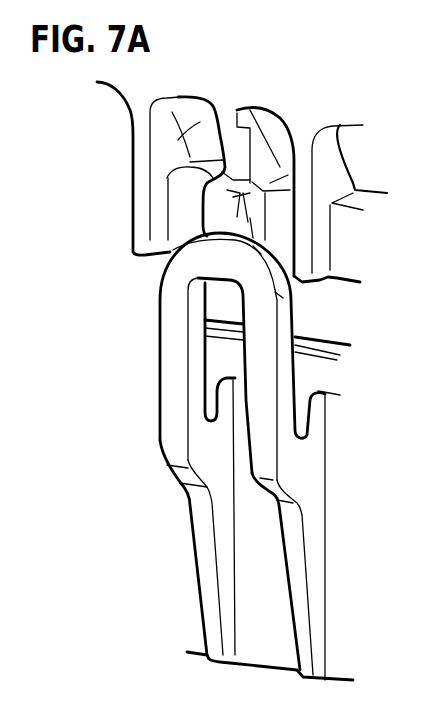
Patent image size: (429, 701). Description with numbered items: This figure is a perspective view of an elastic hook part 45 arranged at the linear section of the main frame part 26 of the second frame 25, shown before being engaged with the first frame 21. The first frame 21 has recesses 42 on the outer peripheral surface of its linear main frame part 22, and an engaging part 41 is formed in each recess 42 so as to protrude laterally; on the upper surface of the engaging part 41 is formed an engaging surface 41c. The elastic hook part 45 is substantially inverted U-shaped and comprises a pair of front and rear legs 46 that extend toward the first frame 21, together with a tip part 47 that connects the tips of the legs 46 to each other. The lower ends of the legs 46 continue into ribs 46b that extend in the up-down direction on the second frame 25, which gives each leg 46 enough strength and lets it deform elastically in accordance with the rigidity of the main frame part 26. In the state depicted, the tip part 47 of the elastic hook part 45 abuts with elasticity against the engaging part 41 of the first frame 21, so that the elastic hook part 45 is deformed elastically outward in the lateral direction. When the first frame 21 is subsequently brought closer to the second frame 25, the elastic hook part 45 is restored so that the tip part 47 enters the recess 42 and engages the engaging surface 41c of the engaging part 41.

The first frame 21 is at (126, 168).
The main frame part 22 is at (147, 85).
The second frame 25 is at (224, 577).
The main frame part 26 is at (258, 562).
The engaging part 41 is at (197, 210).
The engaging surface 41c is at (207, 177).
The recess 42 is at (178, 140).
The elastic hook part 45 is at (157, 352).
The leg 46 is at (267, 427).
The rib 46b is at (187, 490).
The tip part 47 is at (210, 260).